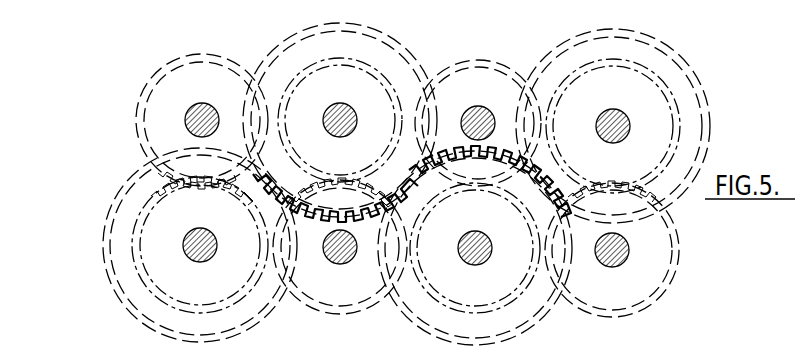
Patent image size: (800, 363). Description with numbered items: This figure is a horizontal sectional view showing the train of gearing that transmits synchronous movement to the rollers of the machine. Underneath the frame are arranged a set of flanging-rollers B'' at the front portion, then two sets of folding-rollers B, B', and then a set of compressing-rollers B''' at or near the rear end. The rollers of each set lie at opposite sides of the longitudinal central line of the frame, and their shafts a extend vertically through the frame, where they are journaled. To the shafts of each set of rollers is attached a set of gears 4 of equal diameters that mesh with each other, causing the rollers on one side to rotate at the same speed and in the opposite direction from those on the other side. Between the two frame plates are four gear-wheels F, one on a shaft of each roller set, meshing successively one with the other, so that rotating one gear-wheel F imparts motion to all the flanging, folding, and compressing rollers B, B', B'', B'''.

The gears 4 is at (423, 130).
The shaft a is at (219, 124).
The folding-rollers B is at (475, 248).
The folding-rollers B' is at (340, 246).
The flanging-rollers B'' is at (612, 249).
The compressing-rollers B''' is at (200, 245).
The gear-wheels F is at (407, 228).